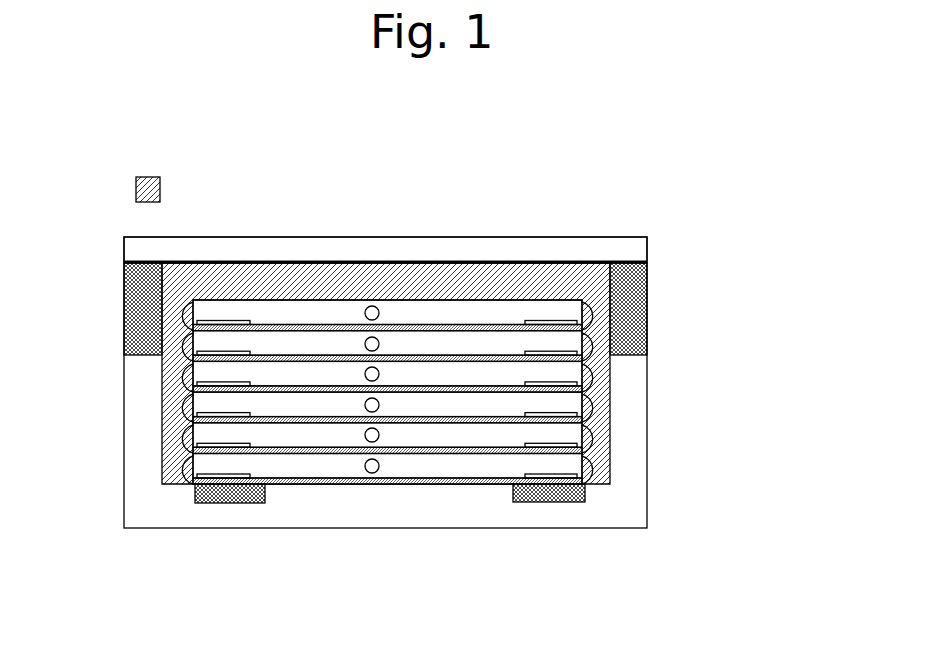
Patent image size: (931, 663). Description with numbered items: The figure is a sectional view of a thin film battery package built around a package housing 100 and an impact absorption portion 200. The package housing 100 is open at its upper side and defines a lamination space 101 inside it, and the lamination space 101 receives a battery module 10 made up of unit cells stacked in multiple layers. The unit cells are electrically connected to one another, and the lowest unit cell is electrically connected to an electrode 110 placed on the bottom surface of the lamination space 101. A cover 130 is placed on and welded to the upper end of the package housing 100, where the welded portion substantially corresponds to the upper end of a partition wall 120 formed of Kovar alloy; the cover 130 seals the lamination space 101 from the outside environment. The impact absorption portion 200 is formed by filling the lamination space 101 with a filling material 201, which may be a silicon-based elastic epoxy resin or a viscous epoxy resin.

The battery module 10 is at (545, 466).
The package housing 100 is at (632, 481).
The lamination space 101 is at (601, 390).
The electrode 110 is at (585, 500).
The partition wall 120 is at (647, 317).
The cover 130 is at (631, 249).
The impact absorption portion 200 is at (200, 281).
The filling material 201 is at (161, 185).